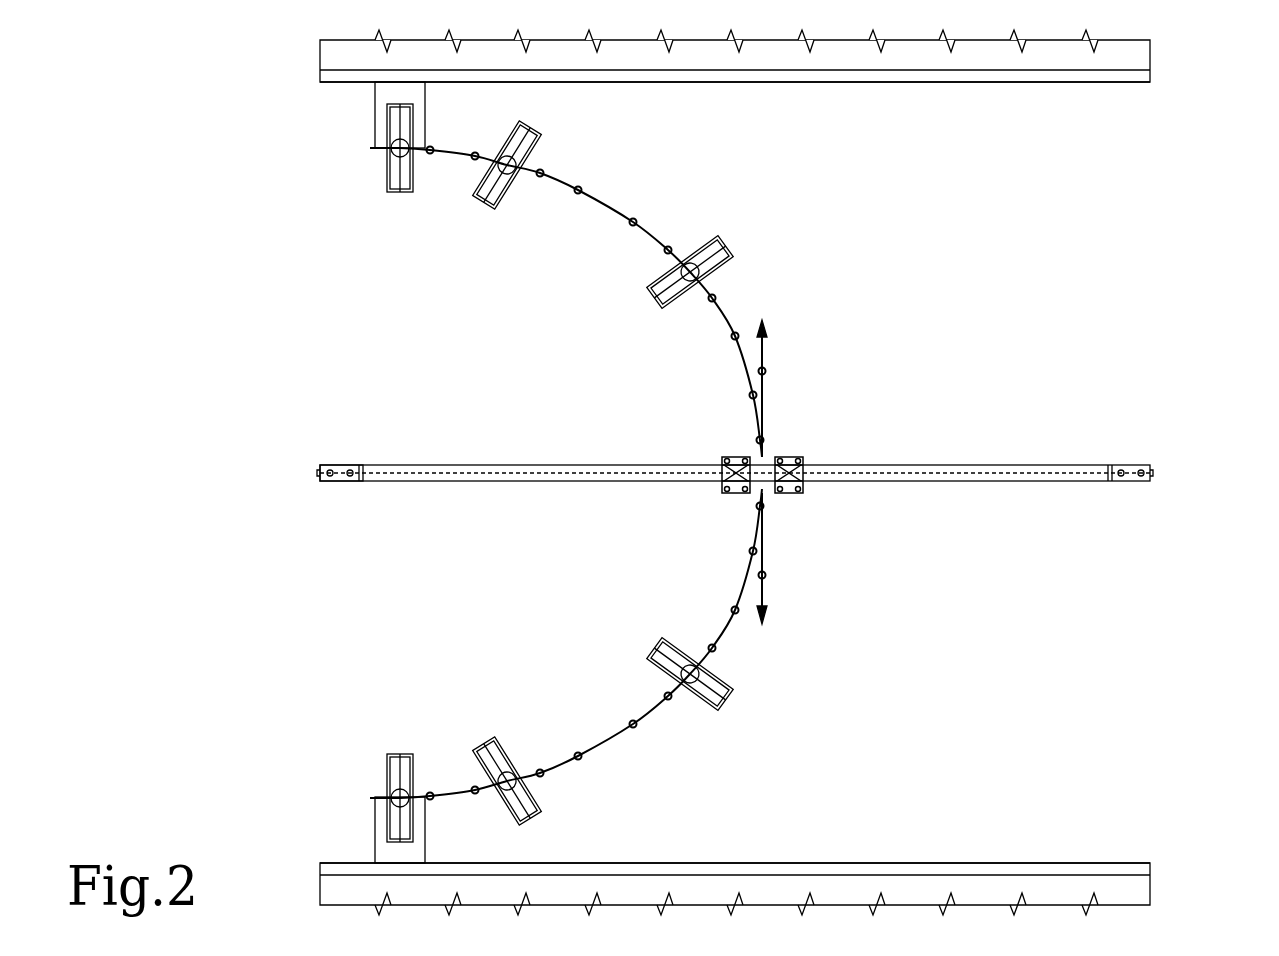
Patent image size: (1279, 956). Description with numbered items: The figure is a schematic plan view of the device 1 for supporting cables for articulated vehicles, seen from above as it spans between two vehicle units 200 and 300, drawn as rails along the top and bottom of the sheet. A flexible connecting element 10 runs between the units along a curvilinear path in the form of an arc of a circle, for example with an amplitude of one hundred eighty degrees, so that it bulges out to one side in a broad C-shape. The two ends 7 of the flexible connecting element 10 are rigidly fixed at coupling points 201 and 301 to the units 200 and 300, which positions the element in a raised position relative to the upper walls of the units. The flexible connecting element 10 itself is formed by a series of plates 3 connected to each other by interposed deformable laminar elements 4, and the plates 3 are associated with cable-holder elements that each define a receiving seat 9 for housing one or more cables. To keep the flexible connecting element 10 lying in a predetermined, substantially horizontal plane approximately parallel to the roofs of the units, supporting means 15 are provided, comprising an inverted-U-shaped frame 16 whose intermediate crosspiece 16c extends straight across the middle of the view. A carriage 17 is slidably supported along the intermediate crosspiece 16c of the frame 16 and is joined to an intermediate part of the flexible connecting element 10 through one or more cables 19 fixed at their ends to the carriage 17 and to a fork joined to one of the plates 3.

The device for supporting cables 1 is at (888, 222).
The plates 3 is at (524, 160).
The deformable laminar elements 4 is at (562, 182).
The ends of the flexible connecting element 7 is at (370, 148).
The receiving seat 9 is at (370, 129).
The flexible connecting element 10 is at (664, 209).
The supporting means 15 is at (868, 452).
The frame 16 is at (735, 545).
The intermediate crosspiece 16c is at (390, 483).
The carriage 17 is at (786, 456).
The cables 19 is at (763, 598).
The unit 200 is at (1140, 52).
The coupling point 201 is at (358, 91).
The unit 300 is at (1140, 893).
The coupling point 301 is at (358, 856).